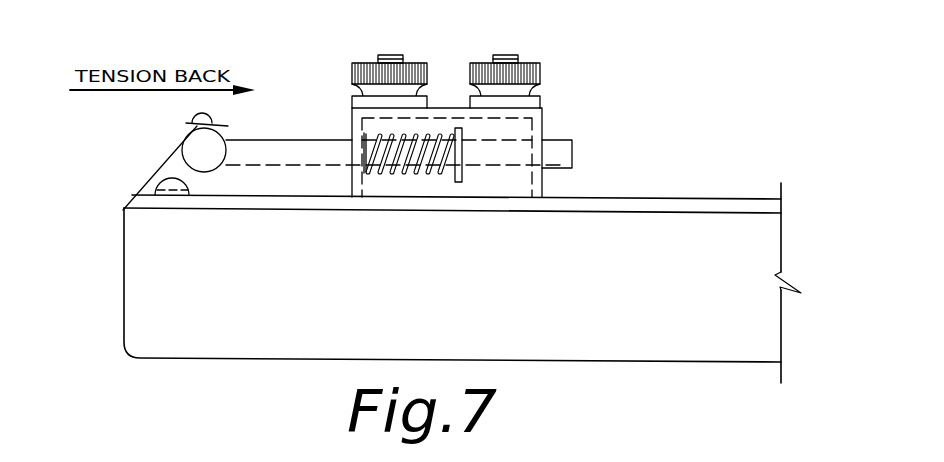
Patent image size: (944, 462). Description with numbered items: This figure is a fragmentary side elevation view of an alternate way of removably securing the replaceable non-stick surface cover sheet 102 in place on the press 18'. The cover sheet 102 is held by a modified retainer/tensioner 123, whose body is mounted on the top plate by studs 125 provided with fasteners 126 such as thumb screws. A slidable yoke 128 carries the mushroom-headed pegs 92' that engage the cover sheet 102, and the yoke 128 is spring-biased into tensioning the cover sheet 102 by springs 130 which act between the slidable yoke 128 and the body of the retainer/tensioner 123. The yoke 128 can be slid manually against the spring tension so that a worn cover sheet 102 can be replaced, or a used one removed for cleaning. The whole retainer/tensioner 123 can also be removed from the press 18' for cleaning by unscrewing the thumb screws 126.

The press 18' is at (442, 295).
The mushroom-headed pegs 92' is at (155, 139).
The replaceable non-stick surface cover sheet 102 is at (140, 171).
The retainer/tensioner 123 is at (568, 97).
The studs 125 is at (506, 55).
The fasteners 126 is at (394, 55).
The slidable yoke 128 is at (291, 122).
The springs 130 is at (410, 178).